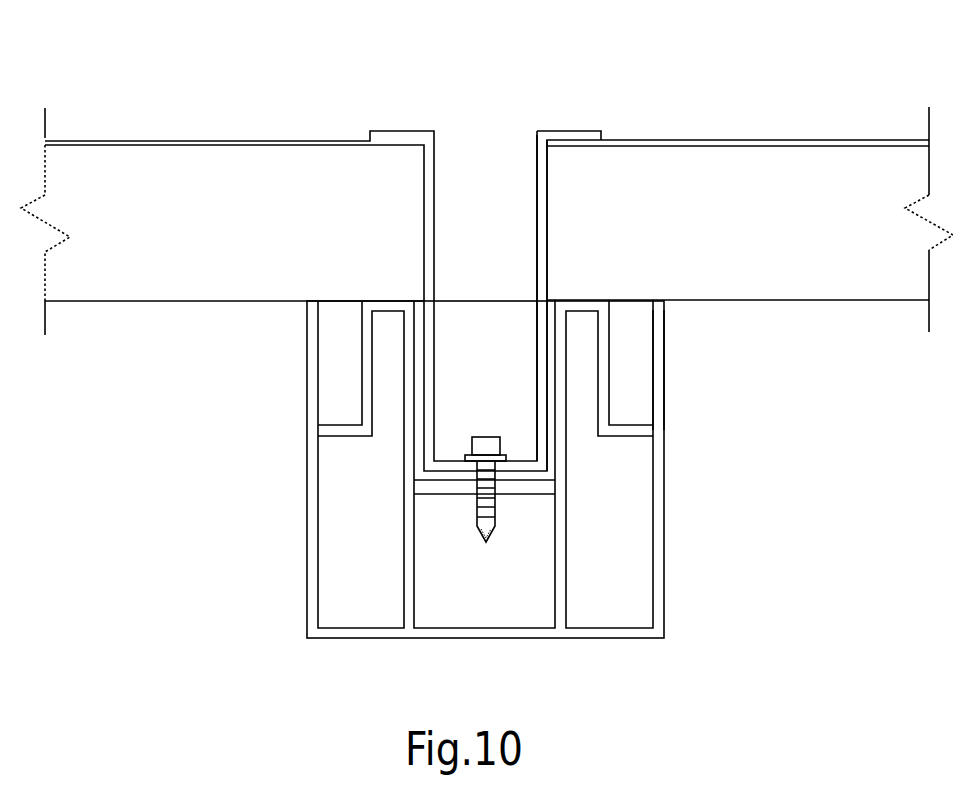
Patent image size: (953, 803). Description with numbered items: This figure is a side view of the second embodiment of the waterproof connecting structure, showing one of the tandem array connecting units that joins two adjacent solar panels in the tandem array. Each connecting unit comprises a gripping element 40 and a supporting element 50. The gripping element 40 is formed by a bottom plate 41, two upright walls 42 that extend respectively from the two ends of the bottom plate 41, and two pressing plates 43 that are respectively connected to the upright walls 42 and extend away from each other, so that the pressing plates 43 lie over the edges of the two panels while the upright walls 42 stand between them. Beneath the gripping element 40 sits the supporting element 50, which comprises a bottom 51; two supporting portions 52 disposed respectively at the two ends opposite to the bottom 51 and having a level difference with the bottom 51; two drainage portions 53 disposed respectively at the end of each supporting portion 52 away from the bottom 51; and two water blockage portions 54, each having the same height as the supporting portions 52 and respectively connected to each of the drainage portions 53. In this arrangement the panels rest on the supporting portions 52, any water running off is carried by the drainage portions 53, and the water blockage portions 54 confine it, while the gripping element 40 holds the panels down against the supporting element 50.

The gripping element 40 is at (487, 244).
The bottom plate 41 is at (520, 465).
The upright walls 42 is at (543, 175).
The pressing plates 43 is at (557, 137).
The supporting element 50 is at (473, 469).
The bottom 51 is at (438, 489).
The supporting portions 52 is at (588, 307).
The drainage portions 53 is at (625, 400).
The water blockage portions 54 is at (656, 395).